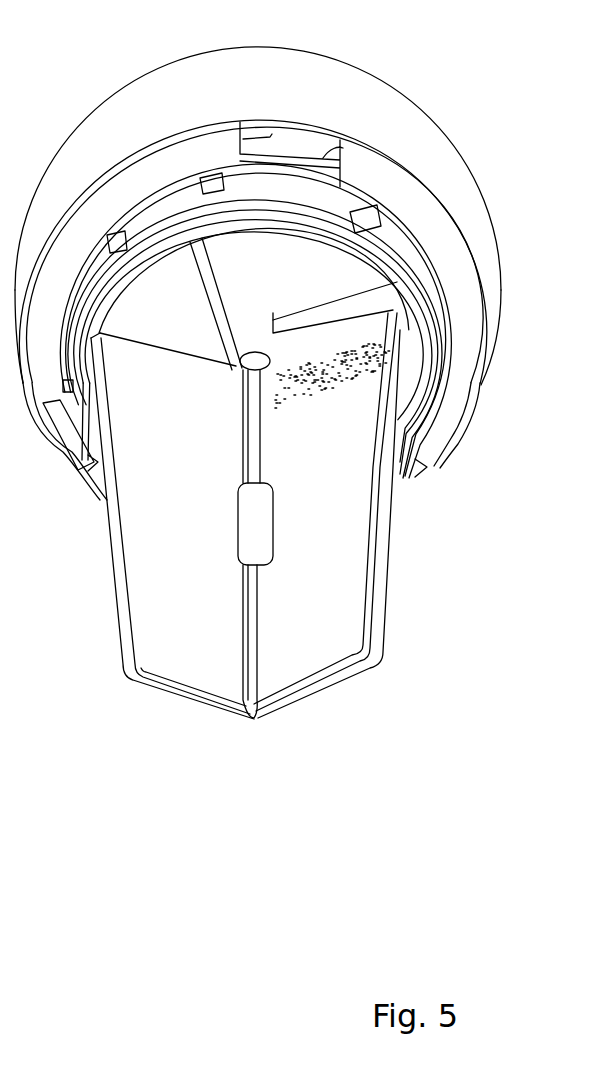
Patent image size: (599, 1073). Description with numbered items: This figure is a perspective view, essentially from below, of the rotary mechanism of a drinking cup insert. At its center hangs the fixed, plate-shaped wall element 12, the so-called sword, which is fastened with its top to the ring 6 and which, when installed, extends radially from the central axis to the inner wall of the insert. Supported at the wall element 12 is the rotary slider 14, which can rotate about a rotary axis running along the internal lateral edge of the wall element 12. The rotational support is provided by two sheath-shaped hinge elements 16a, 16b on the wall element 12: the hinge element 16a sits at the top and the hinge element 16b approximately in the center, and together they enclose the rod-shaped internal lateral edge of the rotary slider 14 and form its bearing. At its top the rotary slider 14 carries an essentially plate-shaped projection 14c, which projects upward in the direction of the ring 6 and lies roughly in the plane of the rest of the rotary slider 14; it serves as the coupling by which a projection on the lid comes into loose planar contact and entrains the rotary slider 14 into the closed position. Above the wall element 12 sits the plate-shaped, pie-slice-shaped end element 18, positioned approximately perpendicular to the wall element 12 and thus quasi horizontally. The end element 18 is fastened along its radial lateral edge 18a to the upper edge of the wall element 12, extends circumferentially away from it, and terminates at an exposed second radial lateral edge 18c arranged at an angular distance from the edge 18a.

The ring 6 is at (258, 273).
The wall element 12 is at (172, 528).
The rotary slider 14 is at (327, 514).
The projection 14c is at (368, 297).
The hinge element 16a is at (259, 352).
The hinge element 16b is at (257, 538).
The end element 18 is at (137, 315).
The radial lateral edge 18a is at (155, 348).
The radial lateral edge 18c is at (206, 281).